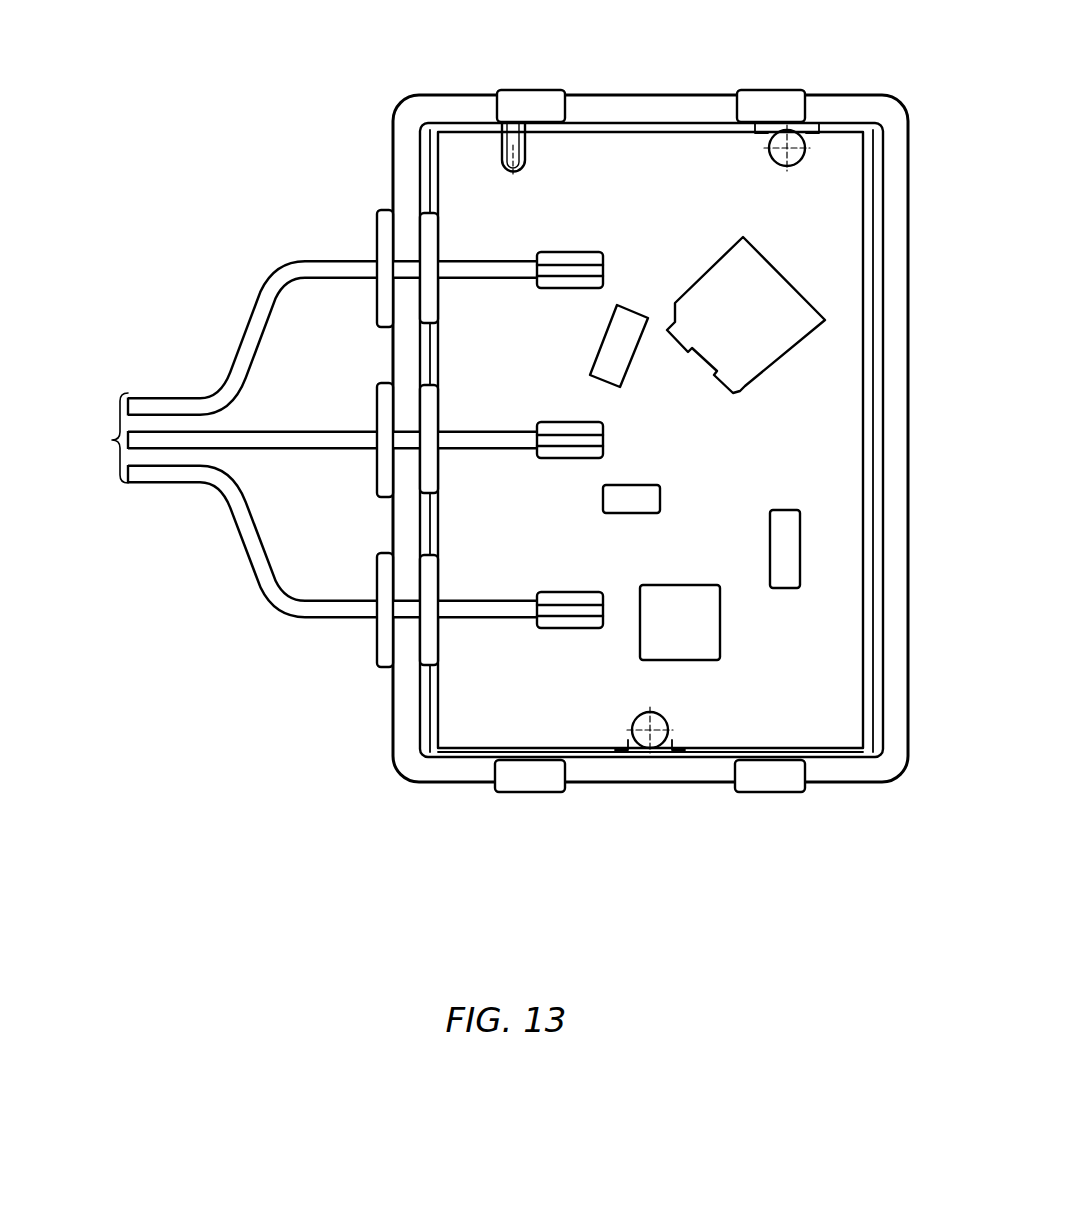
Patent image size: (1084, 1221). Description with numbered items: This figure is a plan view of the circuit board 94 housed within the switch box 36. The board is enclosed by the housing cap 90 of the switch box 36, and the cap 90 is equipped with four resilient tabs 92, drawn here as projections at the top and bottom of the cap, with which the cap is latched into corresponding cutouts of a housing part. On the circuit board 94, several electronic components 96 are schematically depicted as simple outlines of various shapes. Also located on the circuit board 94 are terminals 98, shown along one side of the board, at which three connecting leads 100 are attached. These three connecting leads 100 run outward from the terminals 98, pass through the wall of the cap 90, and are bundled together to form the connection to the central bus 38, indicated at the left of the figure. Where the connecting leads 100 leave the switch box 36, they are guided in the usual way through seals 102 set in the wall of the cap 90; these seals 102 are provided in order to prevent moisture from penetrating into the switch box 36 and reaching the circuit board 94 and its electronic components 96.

The switch box 36 is at (301, 750).
The central bus 38 is at (106, 440).
The housing cap 90 is at (408, 763).
The resilient tabs 92 is at (530, 103).
The circuit board 94 is at (683, 170).
The electronic components 96 is at (630, 350).
The terminals 98 is at (588, 251).
The connecting leads 100 is at (283, 288).
The seals 102 is at (372, 300).